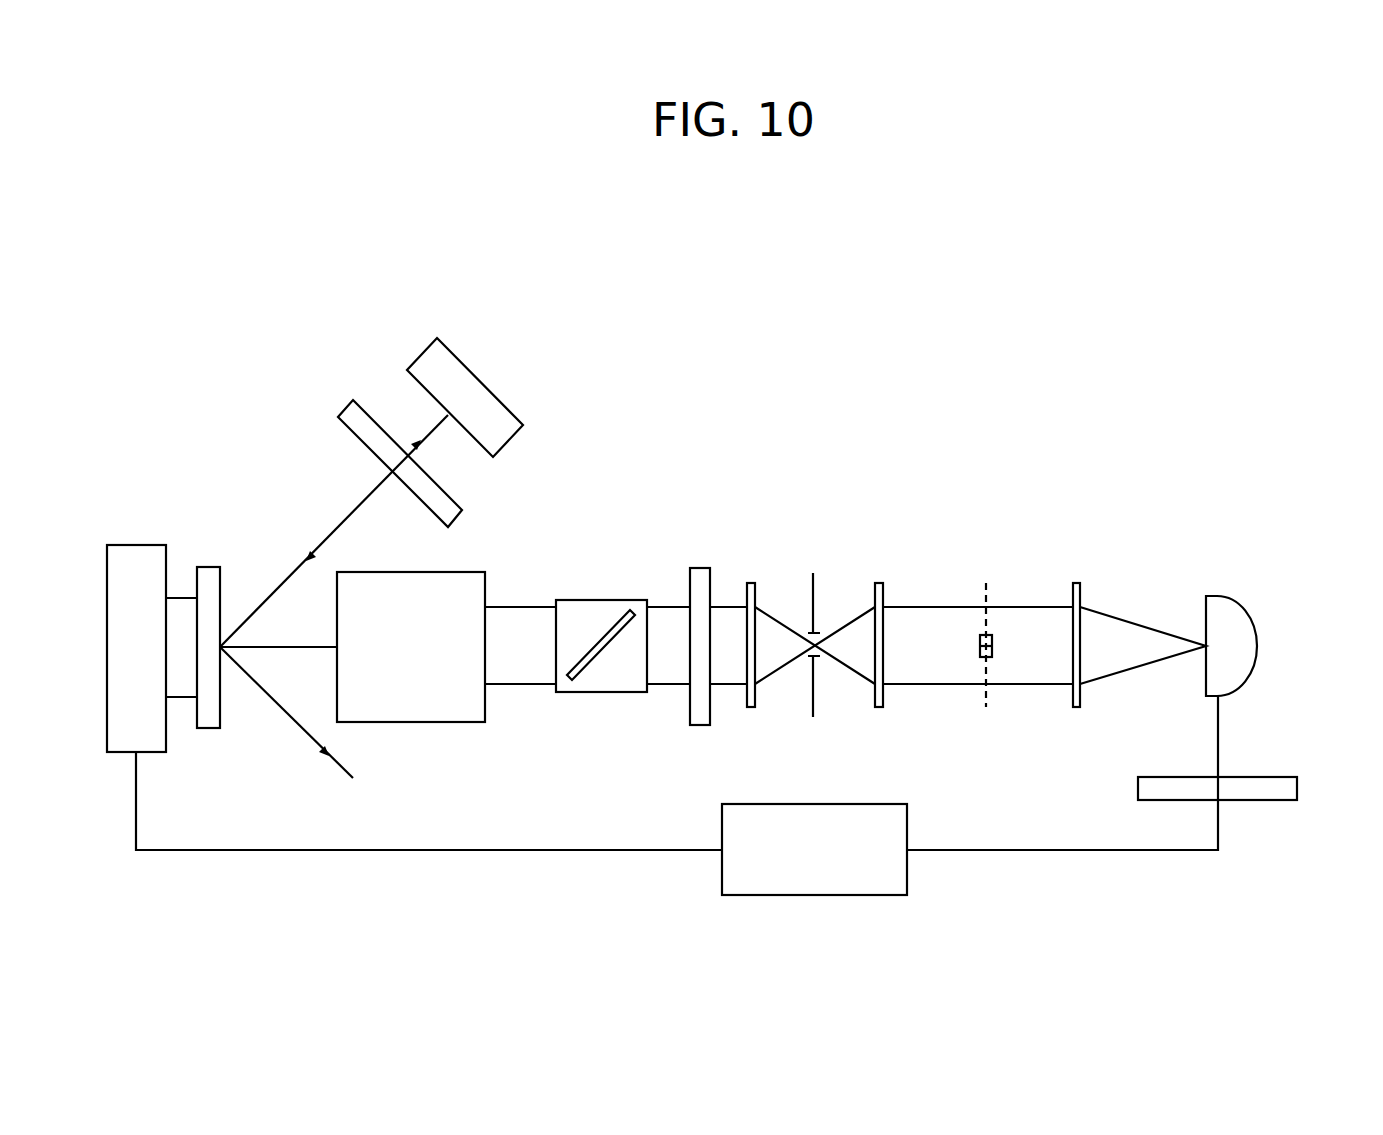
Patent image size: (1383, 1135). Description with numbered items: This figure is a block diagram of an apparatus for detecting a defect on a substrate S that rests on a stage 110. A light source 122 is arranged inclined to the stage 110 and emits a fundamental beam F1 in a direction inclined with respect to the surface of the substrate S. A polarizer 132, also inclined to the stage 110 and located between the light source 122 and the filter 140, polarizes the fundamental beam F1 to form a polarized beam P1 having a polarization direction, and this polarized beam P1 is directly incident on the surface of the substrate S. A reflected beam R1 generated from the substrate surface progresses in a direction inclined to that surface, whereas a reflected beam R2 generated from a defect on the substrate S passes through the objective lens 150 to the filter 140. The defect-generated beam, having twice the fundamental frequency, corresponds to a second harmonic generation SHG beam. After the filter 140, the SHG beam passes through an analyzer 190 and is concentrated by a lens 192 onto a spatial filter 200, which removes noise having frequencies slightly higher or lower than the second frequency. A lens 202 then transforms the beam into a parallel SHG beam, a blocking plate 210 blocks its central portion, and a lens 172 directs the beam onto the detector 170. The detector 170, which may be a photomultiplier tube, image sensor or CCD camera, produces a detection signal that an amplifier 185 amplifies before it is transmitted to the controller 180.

The stage 110 is at (106, 645).
The substrate S is at (208, 729).
The polarized beam P1 is at (313, 543).
The fundamental beam F1 is at (423, 437).
The light source 122 is at (420, 352).
The polarizer 132 is at (345, 405).
The reflected beam R1 is at (286, 716).
The reflected beam R2 is at (278, 634).
The objective lens 150 is at (412, 722).
The filter 140 is at (600, 692).
The analyzer 190 is at (697, 725).
The lens 192 is at (752, 707).
The spatial filter 200 is at (815, 592).
The second harmonic generation beam SHG is at (927, 607).
The lens 202 is at (878, 707).
The blocking plate 210 is at (978, 648).
The lens 172 is at (1075, 707).
The detector 170 is at (1257, 643).
The amplifier 185 is at (1297, 787).
The controller 180 is at (907, 886).